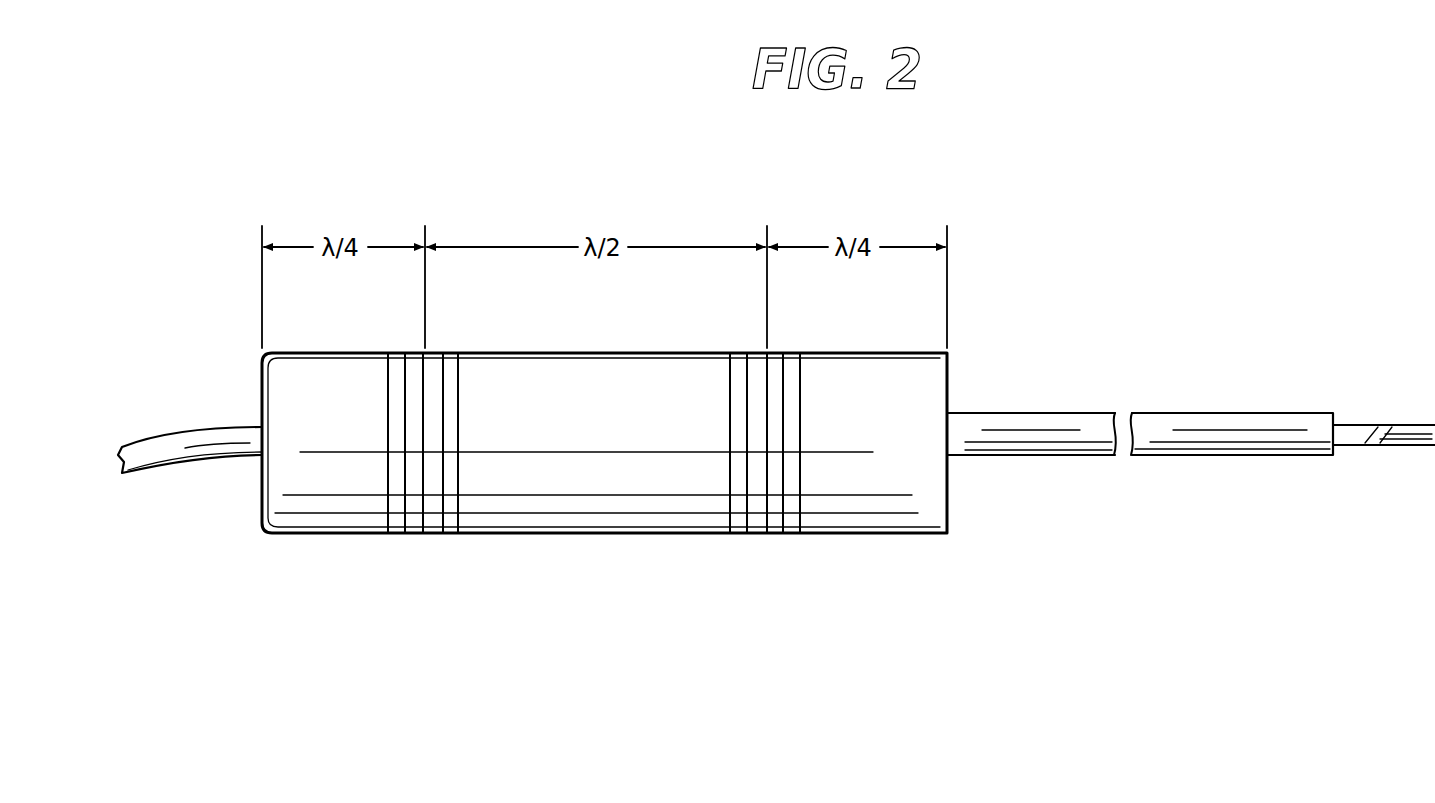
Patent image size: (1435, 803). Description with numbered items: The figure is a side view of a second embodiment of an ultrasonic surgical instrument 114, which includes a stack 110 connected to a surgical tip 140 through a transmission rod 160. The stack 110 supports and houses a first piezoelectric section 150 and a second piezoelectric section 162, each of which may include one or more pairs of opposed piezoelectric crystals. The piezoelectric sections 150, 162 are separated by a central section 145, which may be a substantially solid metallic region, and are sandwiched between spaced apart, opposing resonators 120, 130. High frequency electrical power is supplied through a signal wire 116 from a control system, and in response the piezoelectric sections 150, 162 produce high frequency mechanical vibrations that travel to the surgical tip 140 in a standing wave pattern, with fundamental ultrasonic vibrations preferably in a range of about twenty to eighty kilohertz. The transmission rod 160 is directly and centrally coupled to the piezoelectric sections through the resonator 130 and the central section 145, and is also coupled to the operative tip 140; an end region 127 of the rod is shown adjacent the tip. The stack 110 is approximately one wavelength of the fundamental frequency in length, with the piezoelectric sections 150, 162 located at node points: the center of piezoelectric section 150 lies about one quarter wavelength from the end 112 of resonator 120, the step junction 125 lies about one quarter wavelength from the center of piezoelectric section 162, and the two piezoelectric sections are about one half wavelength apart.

The stack 110 is at (424, 546).
The end of resonator 112 is at (260, 382).
The ultrasonic surgical instrument 114 is at (771, 498).
The signal wire 116 is at (172, 428).
The resonator 120 is at (362, 508).
The step junction 125 is at (948, 380).
The end of second lead 127 is at (1337, 453).
The resonator 130 is at (875, 513).
The surgical tip 140 is at (1415, 422).
The central section 145 is at (555, 507).
The first piezoelectric section 150 is at (453, 350).
The transmission rod 160 is at (1145, 440).
The second piezoelectric section 162 is at (792, 350).